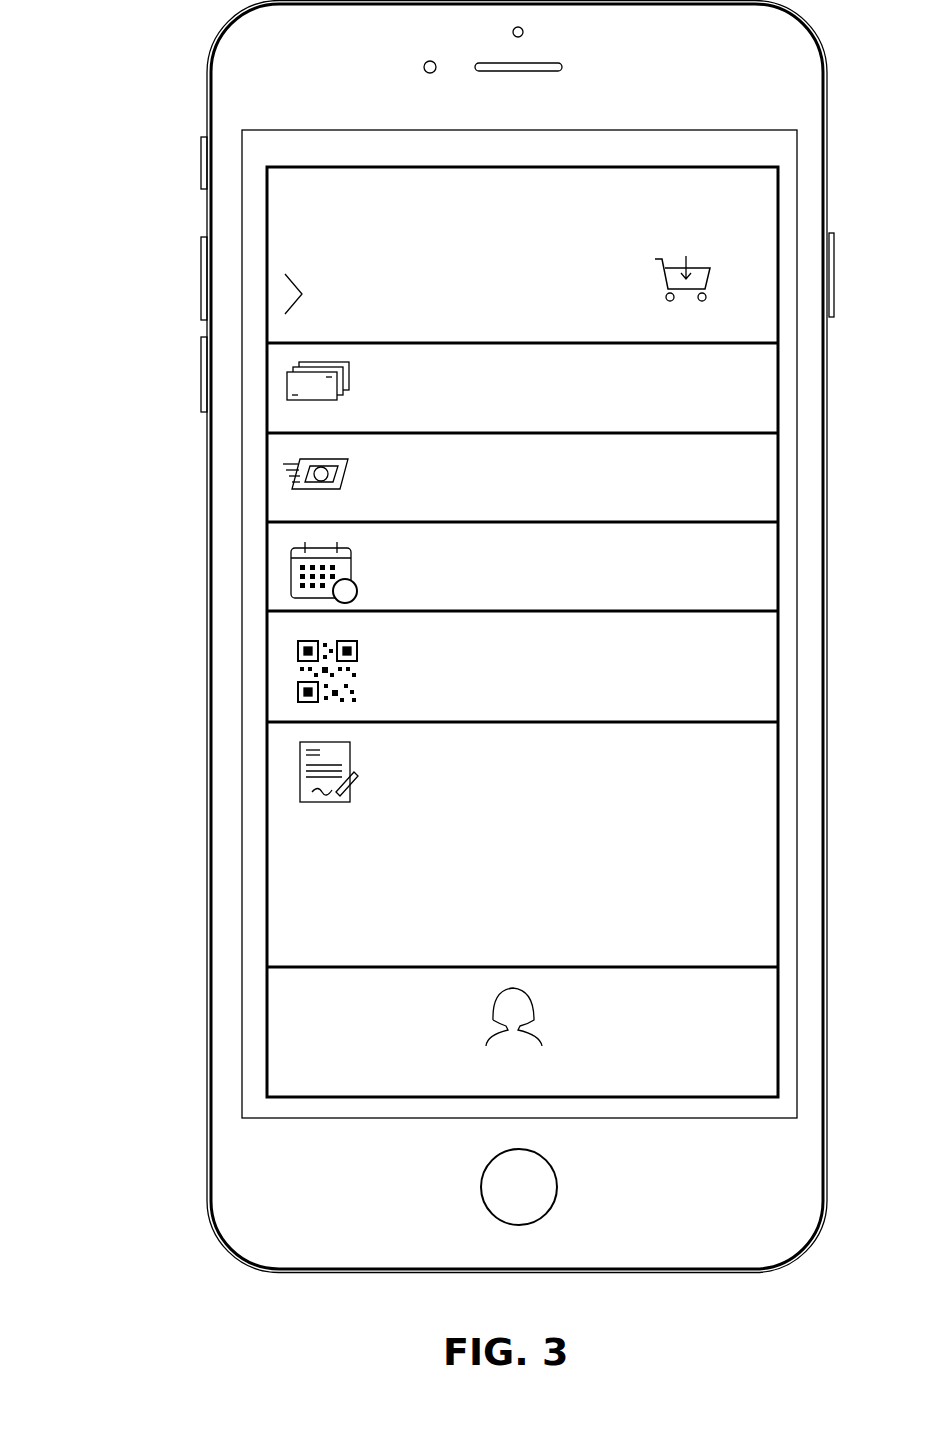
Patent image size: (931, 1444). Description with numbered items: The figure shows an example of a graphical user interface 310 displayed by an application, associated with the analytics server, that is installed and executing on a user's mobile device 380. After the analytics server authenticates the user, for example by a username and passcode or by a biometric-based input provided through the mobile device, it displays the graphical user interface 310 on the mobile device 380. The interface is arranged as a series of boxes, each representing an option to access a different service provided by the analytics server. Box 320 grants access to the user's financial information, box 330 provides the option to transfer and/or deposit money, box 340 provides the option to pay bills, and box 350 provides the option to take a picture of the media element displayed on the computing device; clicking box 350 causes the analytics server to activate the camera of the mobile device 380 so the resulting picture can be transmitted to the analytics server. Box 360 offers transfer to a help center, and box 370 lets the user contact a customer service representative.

The mobile device 380 is at (216, 42).
The graphical user interface 310 is at (287, 215).
The box 320 is at (277, 387).
The box 330 is at (272, 485).
The box 340 is at (275, 575).
The box 350 is at (272, 675).
The box 360 is at (275, 767).
The box 370 is at (277, 1035).